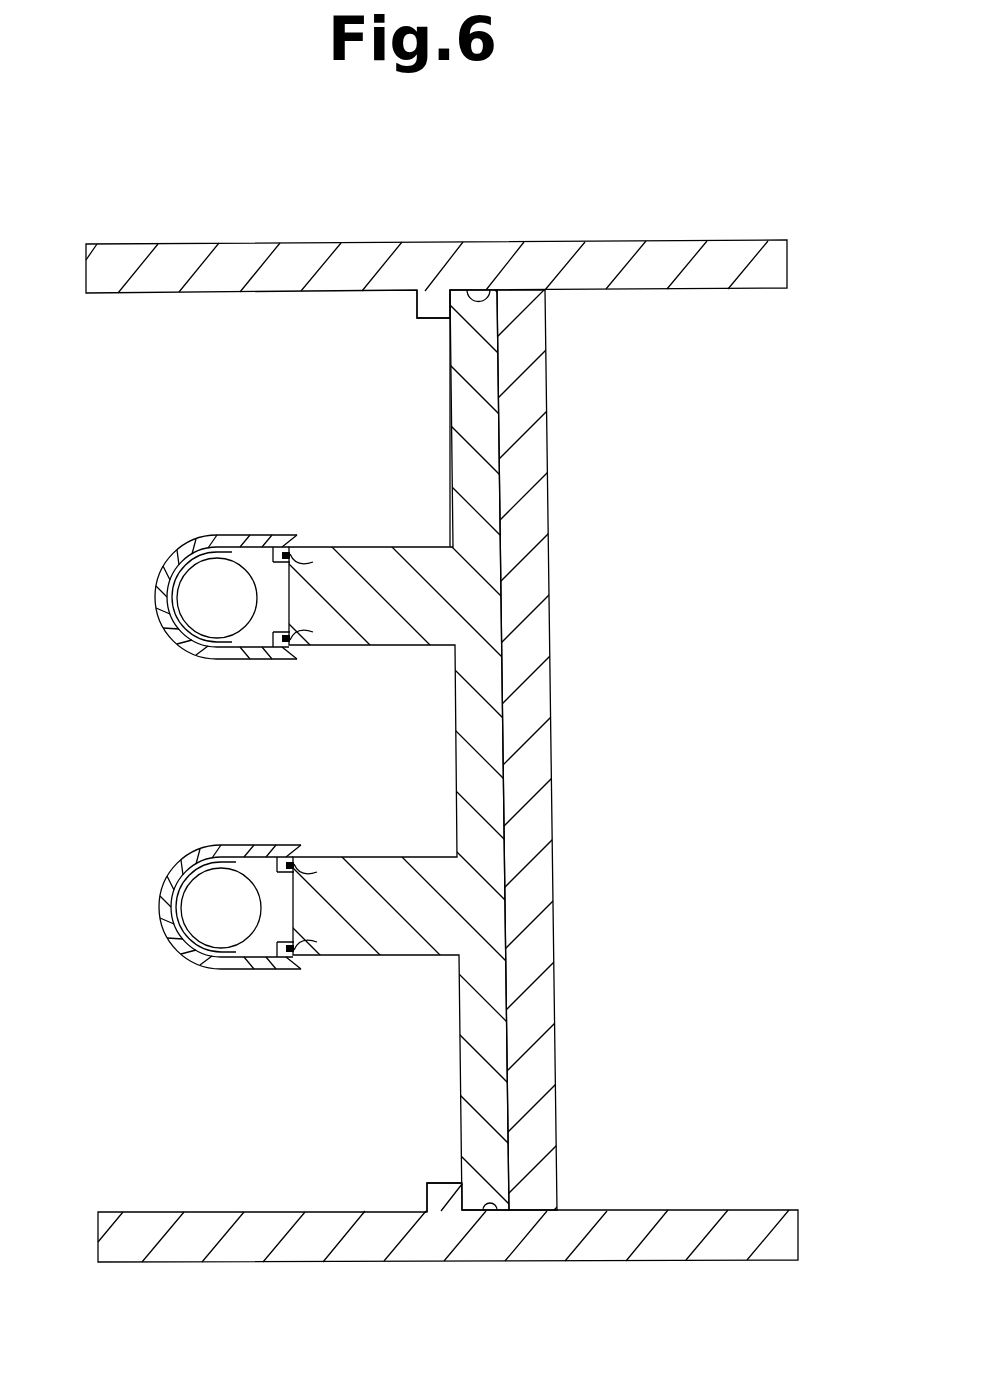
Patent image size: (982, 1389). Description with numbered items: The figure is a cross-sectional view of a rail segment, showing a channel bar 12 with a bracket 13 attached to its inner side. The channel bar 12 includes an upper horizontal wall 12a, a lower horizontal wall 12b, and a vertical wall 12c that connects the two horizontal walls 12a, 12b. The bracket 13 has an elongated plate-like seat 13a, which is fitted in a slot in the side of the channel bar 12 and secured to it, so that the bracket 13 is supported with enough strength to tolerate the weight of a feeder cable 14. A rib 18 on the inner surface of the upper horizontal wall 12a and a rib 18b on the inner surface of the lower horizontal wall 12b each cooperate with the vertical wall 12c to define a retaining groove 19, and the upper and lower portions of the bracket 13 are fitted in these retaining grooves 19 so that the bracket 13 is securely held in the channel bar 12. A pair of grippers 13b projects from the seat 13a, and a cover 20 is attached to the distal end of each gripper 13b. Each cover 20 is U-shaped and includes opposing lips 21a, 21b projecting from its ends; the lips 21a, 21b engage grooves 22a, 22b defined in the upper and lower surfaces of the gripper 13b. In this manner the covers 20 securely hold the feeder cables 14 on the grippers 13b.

The channel bar 12 is at (567, 212).
The upper horizontal wall 12a is at (237, 258).
The lower horizontal wall 12b is at (240, 1247).
The vertical wall 12c is at (550, 692).
The bracket 13 is at (475, 1078).
The seat 13a is at (450, 398).
The gripper 13b is at (200, 660).
The feeder cable 14 is at (203, 606).
The rib 18 is at (433, 303).
The rib 18b is at (440, 1193).
The retaining groove 19 is at (483, 287).
The cover 20 is at (153, 583).
The lip 21a is at (287, 535).
The lip 21b is at (287, 665).
The groove 22a is at (296, 558).
The groove 22b is at (296, 638).